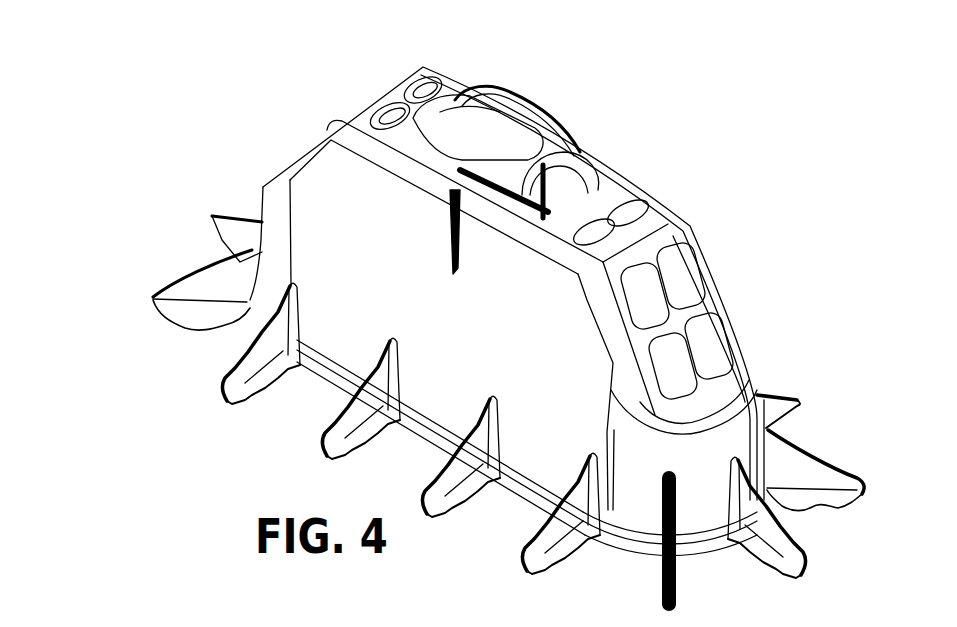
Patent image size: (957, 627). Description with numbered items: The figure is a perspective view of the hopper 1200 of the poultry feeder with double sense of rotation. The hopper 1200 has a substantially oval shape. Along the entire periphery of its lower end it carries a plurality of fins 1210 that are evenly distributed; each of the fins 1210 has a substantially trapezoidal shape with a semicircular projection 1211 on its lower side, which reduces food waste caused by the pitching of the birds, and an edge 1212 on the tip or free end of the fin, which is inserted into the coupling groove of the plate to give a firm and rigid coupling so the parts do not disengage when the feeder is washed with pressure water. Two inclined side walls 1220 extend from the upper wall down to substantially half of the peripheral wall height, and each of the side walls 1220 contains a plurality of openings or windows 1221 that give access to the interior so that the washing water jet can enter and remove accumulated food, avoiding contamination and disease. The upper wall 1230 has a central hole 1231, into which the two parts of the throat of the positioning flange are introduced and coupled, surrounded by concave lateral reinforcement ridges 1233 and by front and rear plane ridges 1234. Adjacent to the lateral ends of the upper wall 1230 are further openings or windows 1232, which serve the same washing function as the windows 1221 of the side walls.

The hopper 1200 is at (660, 190).
The fins 1210 is at (326, 441).
The semicircular projection 1211 is at (553, 556).
The edge 1212 is at (153, 297).
The inclined side walls 1220 is at (712, 300).
The openings or windows 1221 is at (673, 278).
The upper wall 1230 is at (607, 187).
The central hole 1231 is at (503, 152).
The openings or windows 1232 is at (366, 108).
The concave lateral reinforcement ridges 1233 is at (551, 155).
The front and rear plane ridges 1234 is at (553, 122).